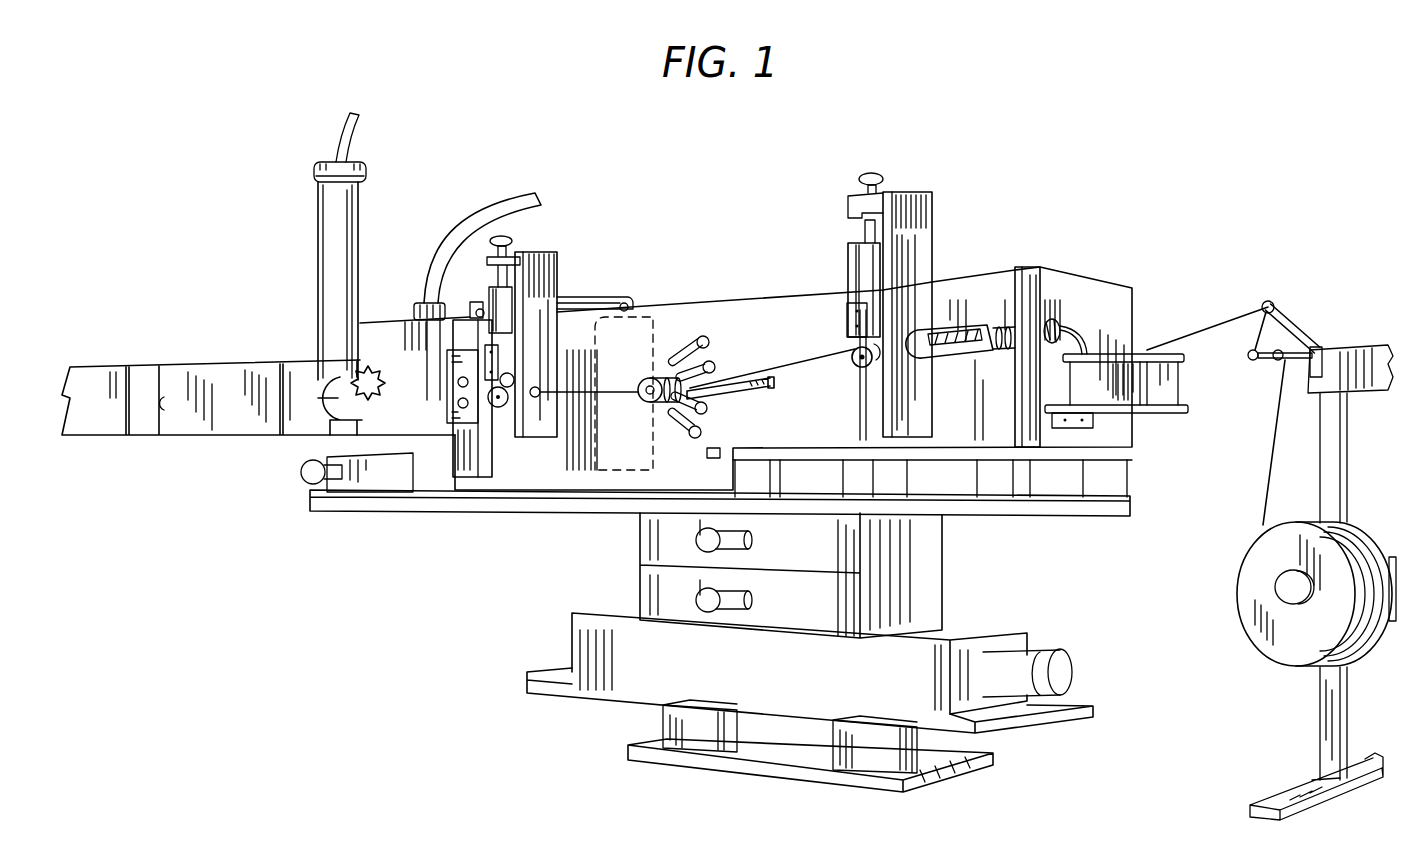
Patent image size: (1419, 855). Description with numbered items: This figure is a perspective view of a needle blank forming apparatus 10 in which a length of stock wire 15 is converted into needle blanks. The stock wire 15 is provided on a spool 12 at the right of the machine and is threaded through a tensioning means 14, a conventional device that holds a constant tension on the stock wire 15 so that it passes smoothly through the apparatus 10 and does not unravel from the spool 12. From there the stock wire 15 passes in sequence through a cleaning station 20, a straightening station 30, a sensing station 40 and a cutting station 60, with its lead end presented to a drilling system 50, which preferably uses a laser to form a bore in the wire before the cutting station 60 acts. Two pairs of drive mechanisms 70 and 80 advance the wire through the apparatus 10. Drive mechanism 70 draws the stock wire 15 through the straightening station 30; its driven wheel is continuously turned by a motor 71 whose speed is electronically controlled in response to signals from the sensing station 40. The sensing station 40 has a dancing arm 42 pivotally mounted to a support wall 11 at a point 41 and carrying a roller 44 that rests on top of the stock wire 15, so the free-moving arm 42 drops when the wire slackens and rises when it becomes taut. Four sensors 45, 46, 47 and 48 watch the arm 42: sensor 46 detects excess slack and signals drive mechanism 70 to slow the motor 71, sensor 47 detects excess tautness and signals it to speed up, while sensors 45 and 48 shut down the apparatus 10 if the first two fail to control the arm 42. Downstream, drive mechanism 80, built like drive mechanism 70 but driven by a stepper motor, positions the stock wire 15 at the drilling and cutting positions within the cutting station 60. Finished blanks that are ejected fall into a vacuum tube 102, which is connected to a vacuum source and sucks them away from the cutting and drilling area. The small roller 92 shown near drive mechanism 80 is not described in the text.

The needle blank forming apparatus 10 is at (317, 642).
The support wall 11 is at (834, 332).
The spool 12 is at (1319, 642).
The tensioning means 14 is at (1300, 322).
The stock wire 15 is at (801, 338).
The cleaning station 20 is at (1153, 422).
The straightening station 30 is at (970, 313).
The sensing station 40 is at (707, 335).
The pivot point 41 is at (770, 388).
The dancing arm 42 is at (733, 420).
The roller 44 is at (647, 383).
The sensor 45 is at (690, 438).
The sensor 46 is at (710, 414).
The sensor 47 is at (717, 363).
The sensor 48 is at (700, 337).
The drilling system 50 is at (310, 347).
The cutting station 60 is at (565, 285).
The drive mechanism 70 is at (853, 367).
The motor 71 is at (848, 257).
The drive mechanism 80 is at (497, 420).
The roller 92 is at (507, 390).
The vacuum tube 102 is at (507, 203).